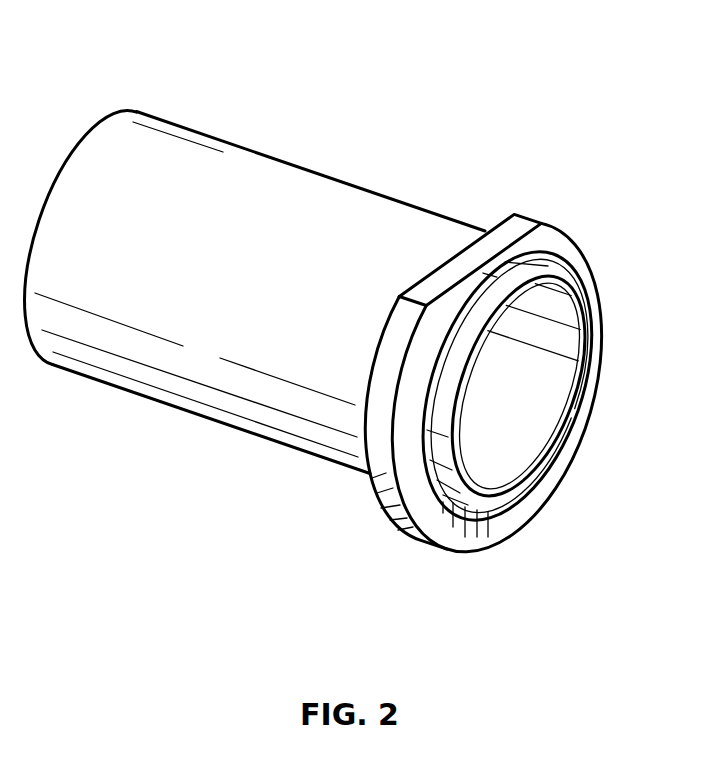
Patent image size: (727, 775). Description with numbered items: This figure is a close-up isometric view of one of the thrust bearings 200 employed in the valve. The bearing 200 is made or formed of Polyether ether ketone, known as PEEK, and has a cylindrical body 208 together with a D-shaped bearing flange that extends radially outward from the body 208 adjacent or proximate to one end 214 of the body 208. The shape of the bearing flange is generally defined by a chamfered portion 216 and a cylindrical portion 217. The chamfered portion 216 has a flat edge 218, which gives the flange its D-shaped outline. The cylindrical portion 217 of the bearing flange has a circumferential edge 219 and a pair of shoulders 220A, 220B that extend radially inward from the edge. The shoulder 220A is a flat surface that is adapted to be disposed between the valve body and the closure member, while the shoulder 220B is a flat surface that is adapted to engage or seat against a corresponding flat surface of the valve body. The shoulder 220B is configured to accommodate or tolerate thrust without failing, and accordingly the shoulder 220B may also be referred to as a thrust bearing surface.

The bearing 200 is at (343, 112).
The cylindrical body 208 is at (220, 327).
The end of the body 214 is at (523, 495).
The chamfered portion 216 is at (524, 363).
The flat edge 218 is at (520, 227).
The cylindrical portion 217 is at (382, 431).
The circumferential edge 219 is at (382, 472).
The shoulder 220A is at (442, 532).
The shoulder 220B is at (385, 345).